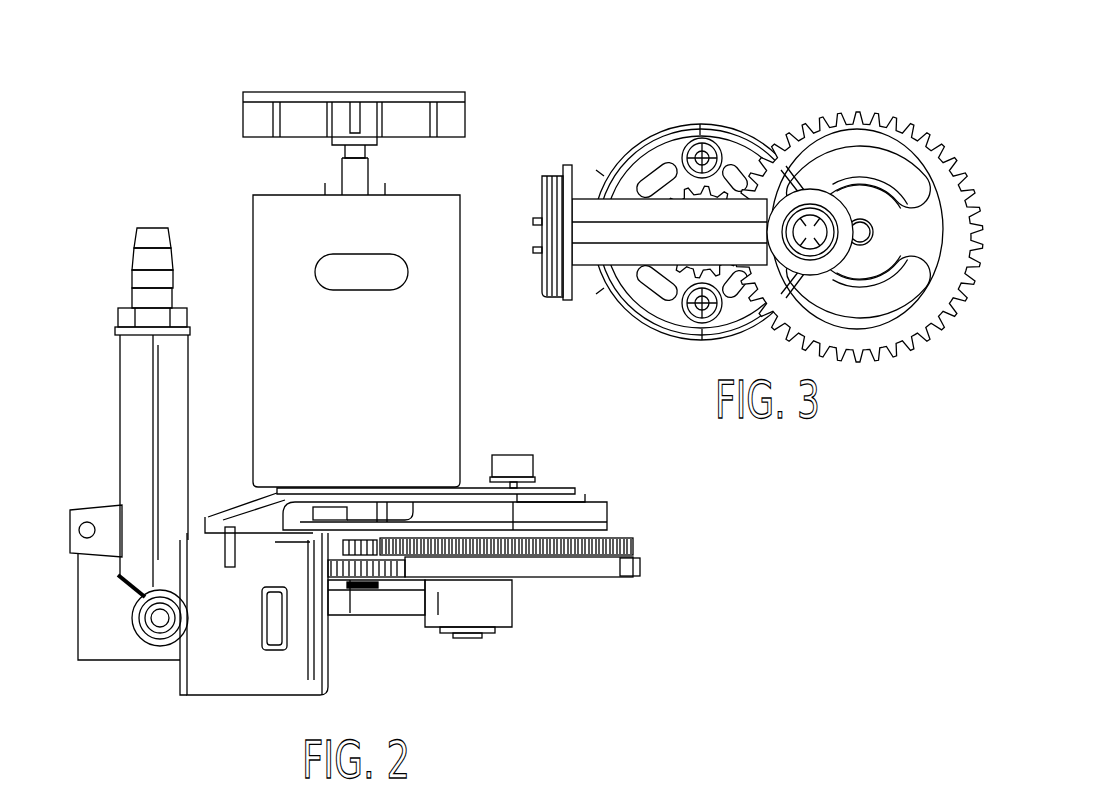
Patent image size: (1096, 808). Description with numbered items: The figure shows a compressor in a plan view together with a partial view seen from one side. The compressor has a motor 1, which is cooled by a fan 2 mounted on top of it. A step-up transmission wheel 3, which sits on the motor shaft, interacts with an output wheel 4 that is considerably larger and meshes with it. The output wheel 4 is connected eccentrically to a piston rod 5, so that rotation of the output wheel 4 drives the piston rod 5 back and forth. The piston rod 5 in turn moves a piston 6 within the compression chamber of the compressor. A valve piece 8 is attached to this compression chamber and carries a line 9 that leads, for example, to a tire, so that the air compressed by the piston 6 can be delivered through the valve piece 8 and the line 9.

In FIG. 2, the motor 1 is at (445, 281).
In FIG. 3, the motor 1 is at (742, 132).
In FIG. 2, the fan 2 is at (408, 96).
In FIG. 2, the step-up transmission wheel 3 is at (362, 583).
In FIG. 3, the step-up transmission wheel 3 is at (685, 187).
In FIG. 2, the output wheel 4 is at (567, 578).
In FIG. 3, the output wheel 4 is at (938, 150).
In FIG. 2, the piston rod 5 is at (402, 607).
In FIG. 3, the piston rod 5 is at (632, 252).
In FIG. 3, the piston 6 is at (563, 298).
In FIG. 2, the valve piece 8 is at (120, 388).
In FIG. 2, the line 9 is at (170, 388).